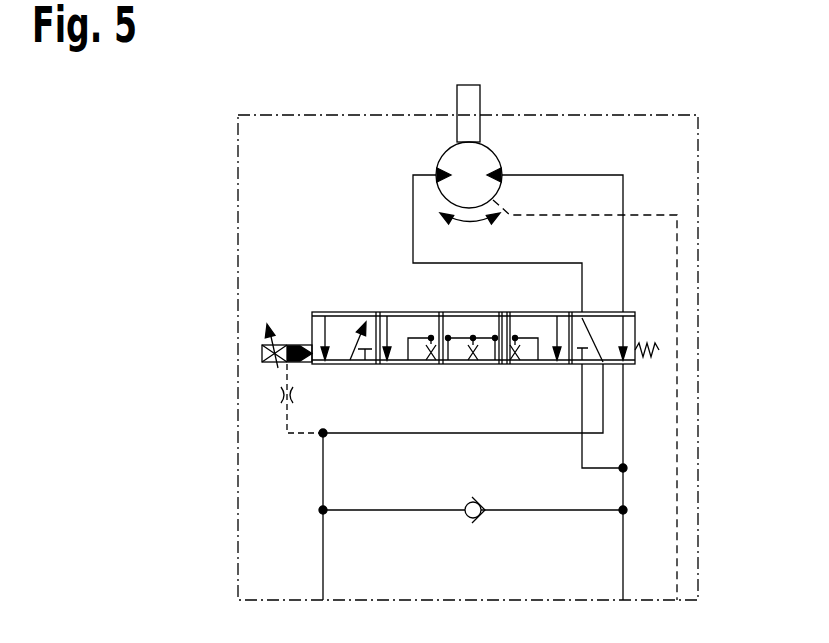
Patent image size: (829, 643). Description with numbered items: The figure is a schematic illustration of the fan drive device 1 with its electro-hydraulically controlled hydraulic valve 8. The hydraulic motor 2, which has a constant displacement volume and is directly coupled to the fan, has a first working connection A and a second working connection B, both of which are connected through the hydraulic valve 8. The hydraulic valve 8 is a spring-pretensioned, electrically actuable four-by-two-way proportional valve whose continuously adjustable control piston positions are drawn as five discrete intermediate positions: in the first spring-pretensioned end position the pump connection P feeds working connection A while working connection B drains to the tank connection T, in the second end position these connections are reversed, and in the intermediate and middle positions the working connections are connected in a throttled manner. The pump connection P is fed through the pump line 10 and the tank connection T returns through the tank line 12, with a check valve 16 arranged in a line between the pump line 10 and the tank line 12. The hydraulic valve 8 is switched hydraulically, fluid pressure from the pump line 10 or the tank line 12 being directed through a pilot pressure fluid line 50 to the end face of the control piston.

The fan drive device 1 is at (200, 140).
The hydraulic motor 2 is at (512, 142).
The hydraulic valve 8 is at (268, 308).
The pump line 10 is at (323, 483).
The tank line 12 is at (625, 560).
The check valve 16 is at (463, 520).
The pilot pressure fluid line 50 is at (285, 418).